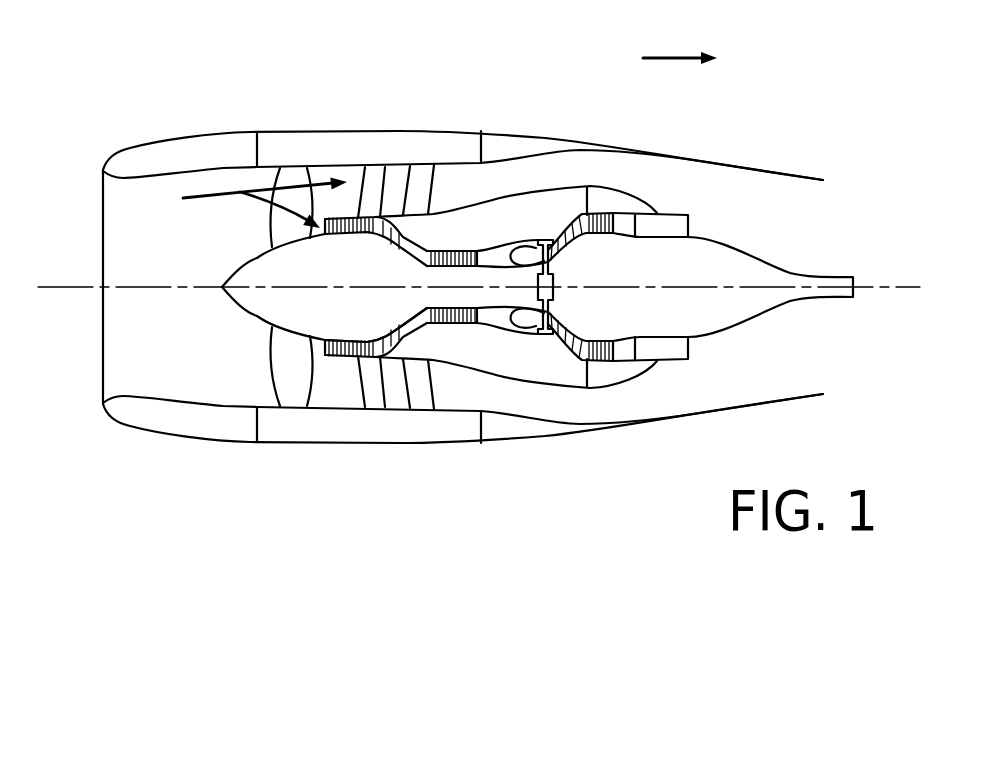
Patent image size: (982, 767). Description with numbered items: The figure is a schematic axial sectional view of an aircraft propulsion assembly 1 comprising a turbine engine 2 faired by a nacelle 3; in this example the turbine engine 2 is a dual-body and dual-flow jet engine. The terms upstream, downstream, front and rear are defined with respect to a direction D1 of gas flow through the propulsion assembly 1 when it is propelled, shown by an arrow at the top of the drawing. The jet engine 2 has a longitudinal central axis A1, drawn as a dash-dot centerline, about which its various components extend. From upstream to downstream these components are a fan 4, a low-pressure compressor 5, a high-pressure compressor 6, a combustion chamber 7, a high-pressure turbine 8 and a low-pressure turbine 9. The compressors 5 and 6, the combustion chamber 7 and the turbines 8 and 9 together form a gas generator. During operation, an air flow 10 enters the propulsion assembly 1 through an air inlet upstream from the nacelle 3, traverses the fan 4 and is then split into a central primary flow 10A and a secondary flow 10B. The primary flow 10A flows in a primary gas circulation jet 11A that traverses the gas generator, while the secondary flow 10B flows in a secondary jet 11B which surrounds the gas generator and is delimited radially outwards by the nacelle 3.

The aircraft propulsion assembly 1 is at (197, 85).
The turbine engine 2 is at (712, 207).
The nacelle 3 is at (381, 145).
The fan 4 is at (282, 358).
The low-pressure compressor 5 is at (350, 212).
The high-pressure compressor 6 is at (462, 250).
The combustion chamber 7 is at (521, 239).
The high-pressure turbine 8 is at (572, 214).
The low-pressure turbine 9 is at (612, 210).
The air flow 10 is at (193, 195).
The primary flow 10A is at (283, 169).
The secondary flow 10B is at (288, 182).
The primary gas circulation jet 11A is at (412, 328).
The secondary jet 11B is at (545, 403).
The longitudinal central axis A1 is at (48, 287).
The direction of gas flow D1 is at (677, 57).